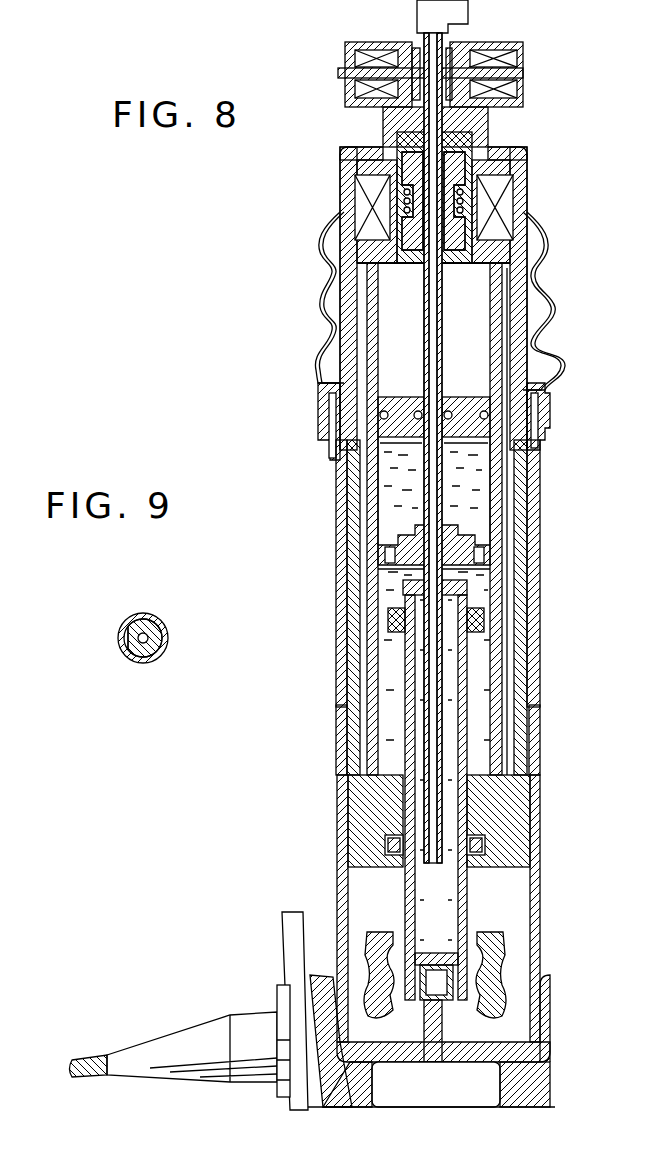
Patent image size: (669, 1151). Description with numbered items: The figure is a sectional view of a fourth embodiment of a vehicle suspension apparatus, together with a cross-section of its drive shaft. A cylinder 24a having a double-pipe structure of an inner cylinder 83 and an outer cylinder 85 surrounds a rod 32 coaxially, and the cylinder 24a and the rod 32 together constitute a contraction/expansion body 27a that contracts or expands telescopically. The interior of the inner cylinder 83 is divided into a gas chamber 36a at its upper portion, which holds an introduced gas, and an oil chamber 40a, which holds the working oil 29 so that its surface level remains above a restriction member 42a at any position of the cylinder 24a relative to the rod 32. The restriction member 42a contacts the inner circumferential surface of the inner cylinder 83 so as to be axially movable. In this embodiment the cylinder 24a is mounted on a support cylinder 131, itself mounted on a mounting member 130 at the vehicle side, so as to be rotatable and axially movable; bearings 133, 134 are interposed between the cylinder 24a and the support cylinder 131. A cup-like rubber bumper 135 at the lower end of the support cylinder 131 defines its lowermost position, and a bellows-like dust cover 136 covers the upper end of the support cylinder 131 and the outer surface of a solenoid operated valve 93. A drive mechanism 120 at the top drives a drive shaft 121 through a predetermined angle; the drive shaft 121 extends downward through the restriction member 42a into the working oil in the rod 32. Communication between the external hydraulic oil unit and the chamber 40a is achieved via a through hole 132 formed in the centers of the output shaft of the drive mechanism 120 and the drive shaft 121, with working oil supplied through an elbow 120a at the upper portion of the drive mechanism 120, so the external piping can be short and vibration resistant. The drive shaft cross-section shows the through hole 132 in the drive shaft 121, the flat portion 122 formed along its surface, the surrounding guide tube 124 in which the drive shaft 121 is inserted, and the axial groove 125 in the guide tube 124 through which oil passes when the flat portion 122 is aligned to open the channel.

In FIG. 8, the elbow 120a is at (468, 8).
In FIG. 8, the drive mechanism 120 is at (523, 62).
In FIG. 8, the solenoid operated valve 93 is at (338, 205).
In FIG. 8, the dust cover 136 is at (330, 292).
In FIG. 8, the bearing 133 is at (335, 420).
In FIG. 8, the outer cylinder 85 is at (537, 690).
In FIG. 8, the contraction/expansion body 27a is at (525, 606).
In FIG. 8, the bearing 134 is at (345, 736).
In FIG. 8, the cylinder 24a is at (348, 357).
In FIG. 8, the oil chamber 40a is at (490, 491).
In FIG. 8, the gas chamber 36a is at (460, 397).
In FIG. 8, the fluid 29 is at (485, 458).
In FIG. 8, the restriction member 42a is at (412, 534).
In FIG. 8, the inner cylinder 83 is at (500, 656).
In FIG. 8, the rod 32 is at (405, 690).
In FIG. 8, the support cylinder 131 is at (337, 887).
In FIG. 8, the rubber bumper 135 is at (378, 942).
In FIG. 8, the mounting member 130 is at (365, 1082).
In FIG. 8, the drive shaft 121 is at (442, 312).
In FIG. 9, the drive shaft 121 is at (150, 622).
In FIG. 8, the through hole 132 is at (438, 338).
In FIG. 9, the through hole 132 is at (150, 638).
In FIG. 9, the flat portion 122 is at (125, 658).
In FIG. 9, the guide tube 124 is at (165, 652).
In FIG. 9, the groove 125 is at (121, 640).